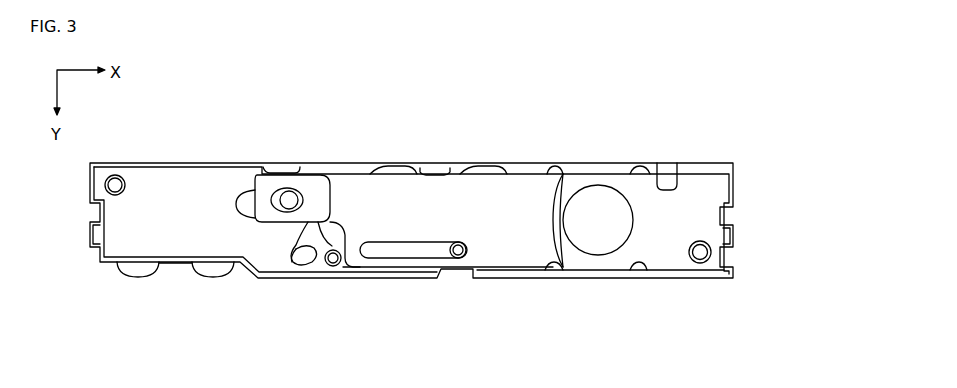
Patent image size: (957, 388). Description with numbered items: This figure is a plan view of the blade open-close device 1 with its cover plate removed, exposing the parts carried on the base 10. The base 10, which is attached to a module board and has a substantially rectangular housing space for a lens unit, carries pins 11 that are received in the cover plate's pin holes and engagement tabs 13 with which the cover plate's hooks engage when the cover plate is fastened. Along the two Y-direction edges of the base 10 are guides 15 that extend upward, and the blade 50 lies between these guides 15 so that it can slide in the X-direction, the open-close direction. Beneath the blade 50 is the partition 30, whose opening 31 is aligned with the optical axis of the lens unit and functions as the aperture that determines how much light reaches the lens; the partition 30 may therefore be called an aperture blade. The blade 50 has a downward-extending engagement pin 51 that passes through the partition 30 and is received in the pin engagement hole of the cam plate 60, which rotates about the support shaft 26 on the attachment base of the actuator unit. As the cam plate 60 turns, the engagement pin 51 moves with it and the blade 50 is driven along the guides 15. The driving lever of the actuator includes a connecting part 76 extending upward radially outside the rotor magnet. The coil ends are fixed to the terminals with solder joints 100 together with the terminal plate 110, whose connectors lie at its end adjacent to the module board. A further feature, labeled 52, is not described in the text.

The blade open-close device 1 is at (674, 116).
The base 10 is at (497, 294).
The pins 11 is at (114, 177).
The engagement tabs 13 is at (90, 231).
The guides 15 is at (607, 170).
The support shaft 26 is at (337, 267).
The partition 30 is at (636, 258).
The opening 31 is at (598, 242).
The blade 50 is at (490, 172).
The engagement pin 51 is at (283, 188).
The slot 52 is at (393, 259).
The cam plate 60 is at (310, 229).
The connecting part 76 is at (308, 262).
The solder joints 100 is at (140, 274).
The terminal plate 110 is at (175, 262).